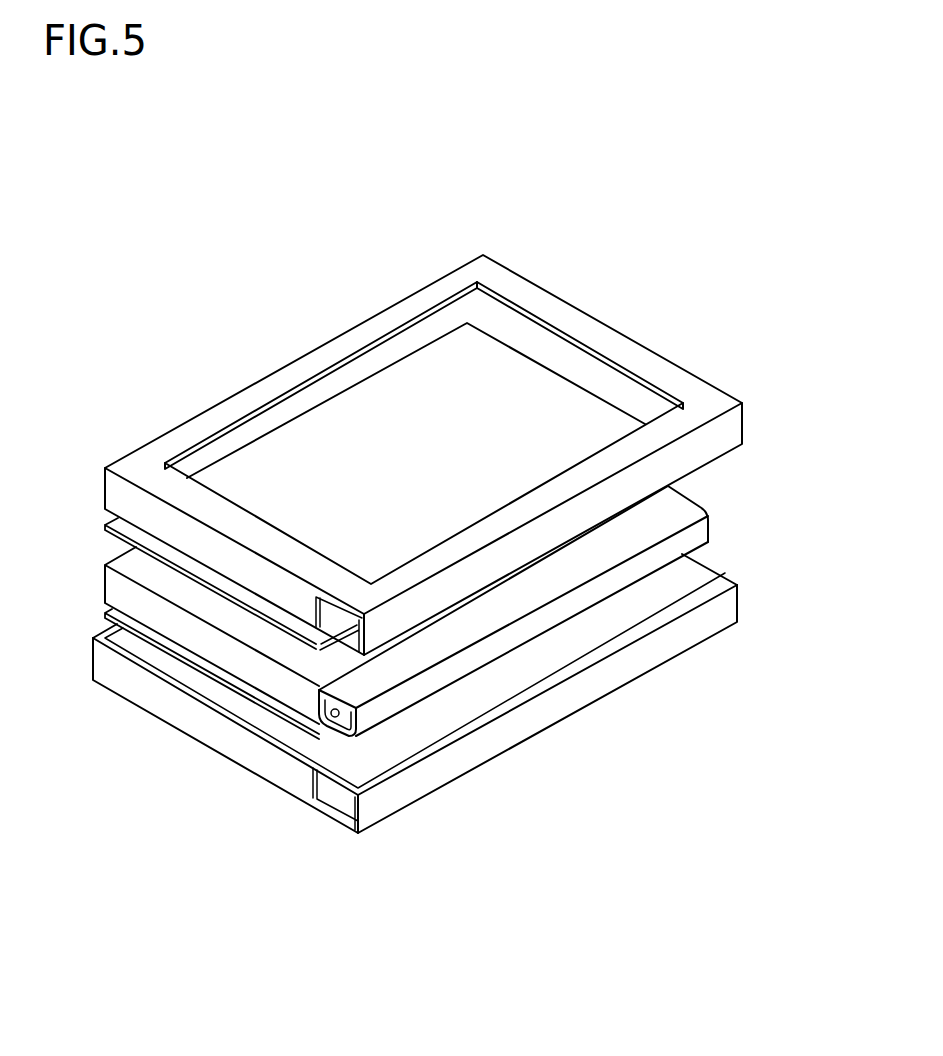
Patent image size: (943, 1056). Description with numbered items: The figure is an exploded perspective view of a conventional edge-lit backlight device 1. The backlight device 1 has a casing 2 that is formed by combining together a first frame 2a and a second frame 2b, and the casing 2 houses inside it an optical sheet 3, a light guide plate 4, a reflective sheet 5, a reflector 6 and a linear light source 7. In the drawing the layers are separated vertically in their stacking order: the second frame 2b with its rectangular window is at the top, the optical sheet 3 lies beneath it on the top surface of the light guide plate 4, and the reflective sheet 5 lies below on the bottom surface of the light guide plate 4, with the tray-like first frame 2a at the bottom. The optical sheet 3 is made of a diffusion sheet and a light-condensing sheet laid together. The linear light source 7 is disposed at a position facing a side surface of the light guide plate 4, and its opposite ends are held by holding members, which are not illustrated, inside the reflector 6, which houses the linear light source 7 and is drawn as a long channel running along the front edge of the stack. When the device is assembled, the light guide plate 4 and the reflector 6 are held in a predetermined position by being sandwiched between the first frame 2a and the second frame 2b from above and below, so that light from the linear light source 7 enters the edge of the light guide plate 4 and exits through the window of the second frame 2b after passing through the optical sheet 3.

The edge-lit backlight device 1 is at (176, 291).
The casing 2 is at (803, 468).
The first frame 2a is at (725, 607).
The second frame 2b is at (725, 433).
The optical sheet 3 is at (108, 531).
The light guide plate 4 is at (115, 587).
The reflective sheet 5 is at (108, 625).
The reflector 6 is at (388, 700).
The linear light source 7 is at (335, 714).